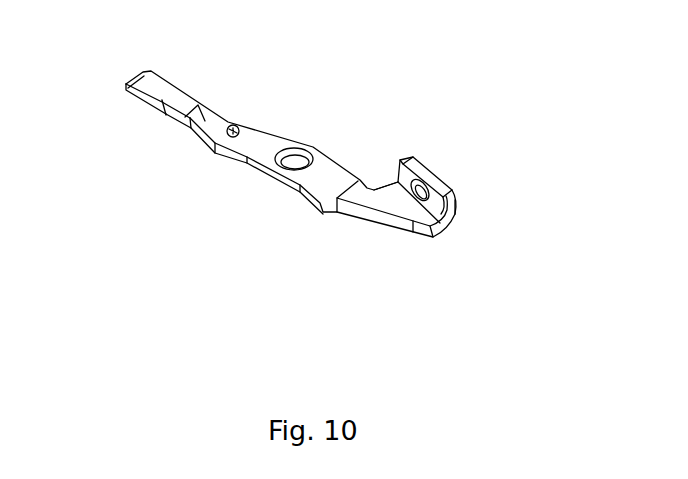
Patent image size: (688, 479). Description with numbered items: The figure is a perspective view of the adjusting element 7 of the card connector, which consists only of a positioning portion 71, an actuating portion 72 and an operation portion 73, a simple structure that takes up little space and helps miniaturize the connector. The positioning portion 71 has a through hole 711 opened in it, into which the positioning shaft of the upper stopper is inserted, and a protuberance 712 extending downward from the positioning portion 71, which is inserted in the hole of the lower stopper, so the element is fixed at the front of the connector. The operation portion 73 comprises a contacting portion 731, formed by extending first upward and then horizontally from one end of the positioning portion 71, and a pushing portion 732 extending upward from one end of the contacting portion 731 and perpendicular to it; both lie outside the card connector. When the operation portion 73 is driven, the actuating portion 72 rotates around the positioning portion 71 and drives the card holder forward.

The adjusting element 7 is at (183, 93).
The positioning portion 71 is at (265, 142).
The through hole 711 is at (298, 160).
The protuberance 712 is at (235, 125).
The actuating portion 72 is at (170, 94).
The operation portion 73 is at (366, 200).
The contacting portion 731 is at (392, 208).
The pushing portion 732 is at (422, 170).